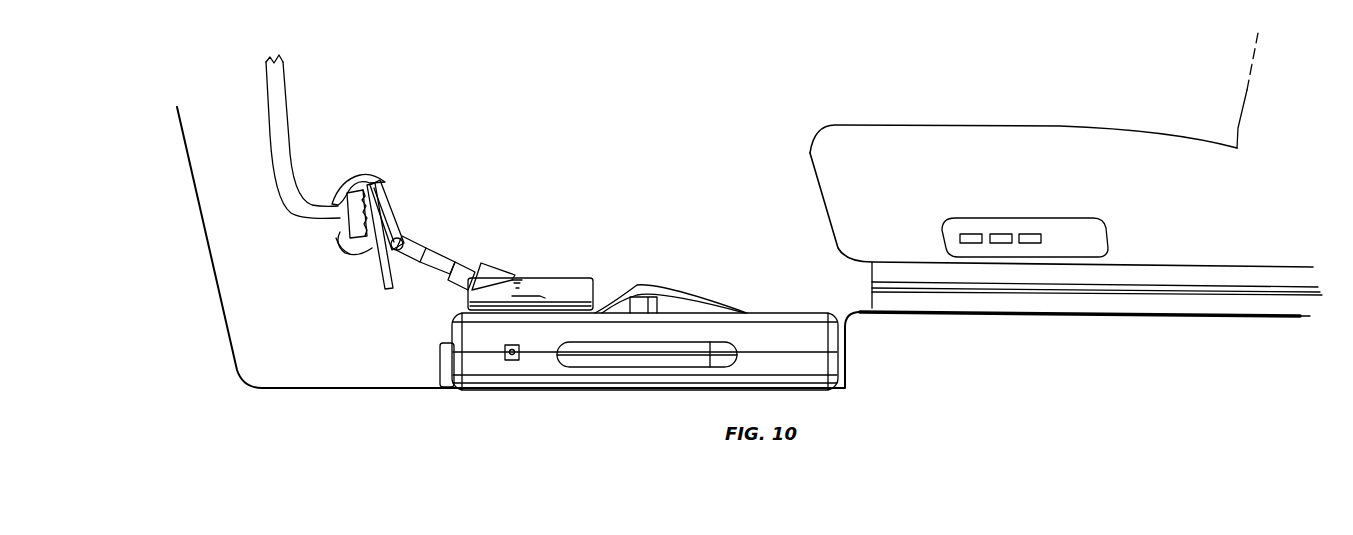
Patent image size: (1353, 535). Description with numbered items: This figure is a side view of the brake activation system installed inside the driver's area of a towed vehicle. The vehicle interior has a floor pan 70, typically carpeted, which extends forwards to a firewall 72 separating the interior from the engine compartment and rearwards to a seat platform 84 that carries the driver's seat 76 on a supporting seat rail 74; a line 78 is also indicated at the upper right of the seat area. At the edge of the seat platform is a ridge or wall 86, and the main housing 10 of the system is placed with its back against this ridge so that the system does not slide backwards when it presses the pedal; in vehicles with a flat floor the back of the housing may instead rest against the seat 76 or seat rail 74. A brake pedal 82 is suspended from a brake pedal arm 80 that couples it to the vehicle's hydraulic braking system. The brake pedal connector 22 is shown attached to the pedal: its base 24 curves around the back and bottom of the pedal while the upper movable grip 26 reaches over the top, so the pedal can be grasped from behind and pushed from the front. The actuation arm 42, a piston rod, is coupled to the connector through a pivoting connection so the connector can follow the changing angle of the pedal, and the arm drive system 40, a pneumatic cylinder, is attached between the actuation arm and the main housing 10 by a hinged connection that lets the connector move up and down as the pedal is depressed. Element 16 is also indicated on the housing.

The main housing 10 is at (794, 336).
The connector block 16 is at (557, 278).
The brake pedal connector 22 is at (390, 218).
The base 24 is at (377, 260).
The movable grip 26 is at (344, 186).
The arm drive system 40 is at (494, 270).
The actuation arm 42 is at (437, 258).
The floor pan 70 is at (388, 390).
The firewall 72 is at (212, 298).
The seat rail 74 is at (1172, 283).
The driver's seat 76 is at (1018, 124).
The reference line 78 is at (1246, 72).
The brake pedal arm 80 is at (288, 122).
The brake pedal 82 is at (346, 222).
The seat platform 84 is at (1224, 318).
The ridge 86 is at (848, 340).